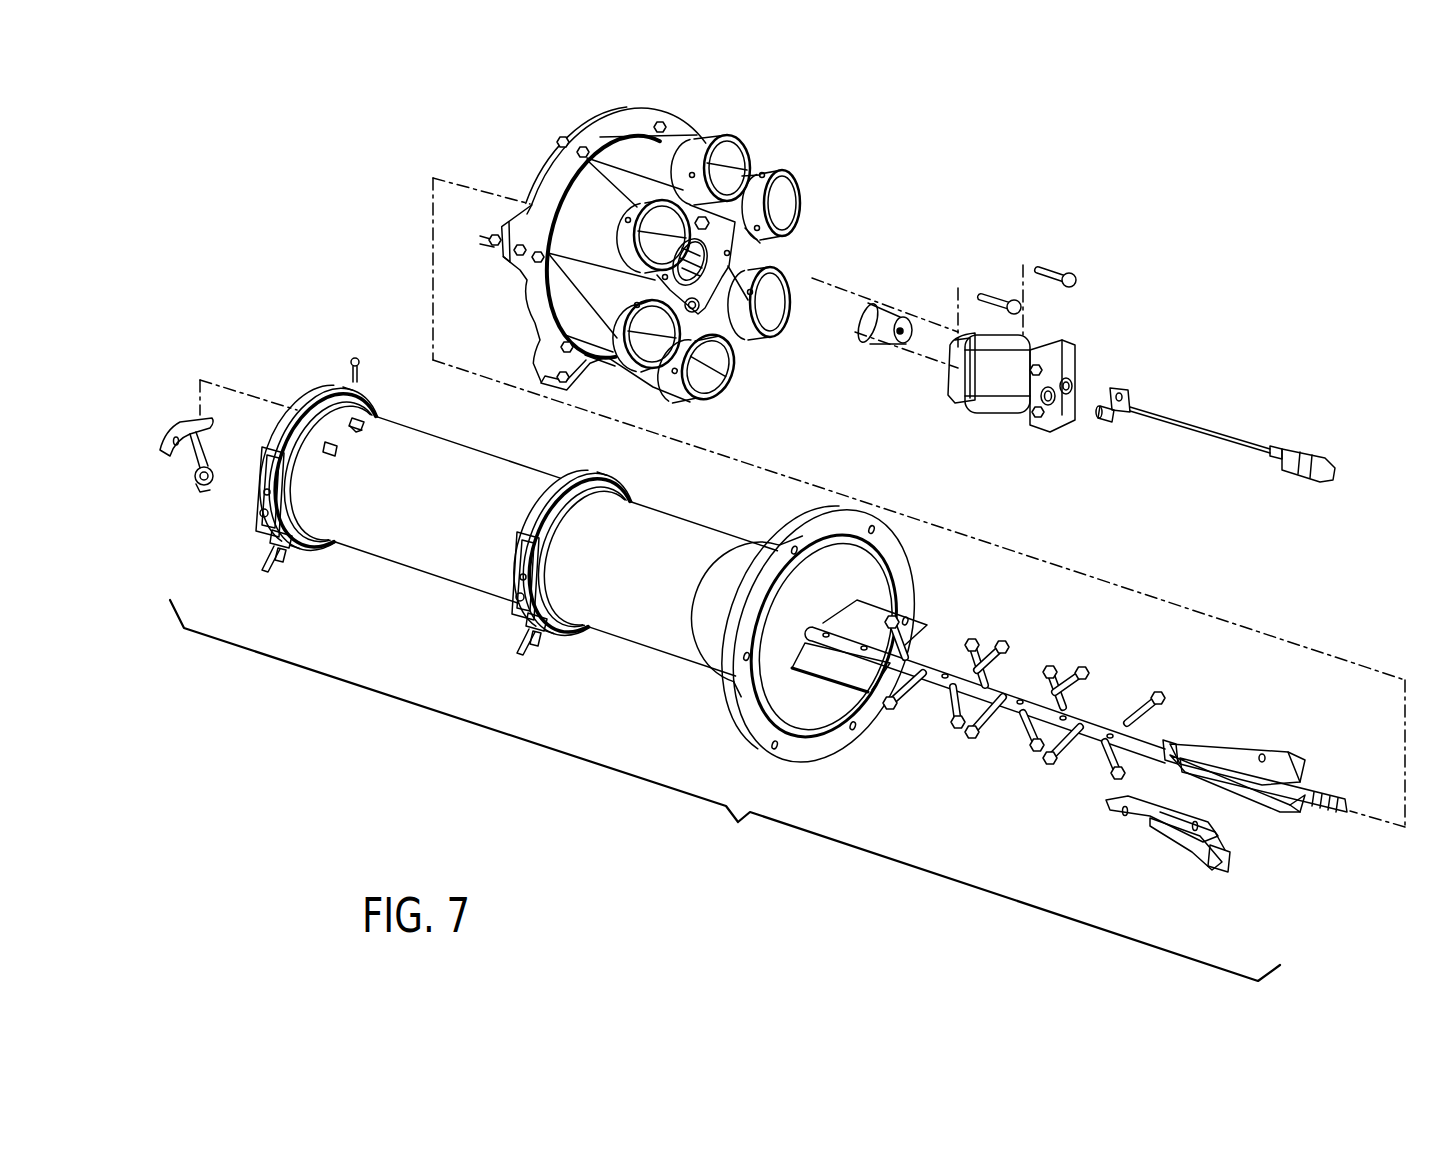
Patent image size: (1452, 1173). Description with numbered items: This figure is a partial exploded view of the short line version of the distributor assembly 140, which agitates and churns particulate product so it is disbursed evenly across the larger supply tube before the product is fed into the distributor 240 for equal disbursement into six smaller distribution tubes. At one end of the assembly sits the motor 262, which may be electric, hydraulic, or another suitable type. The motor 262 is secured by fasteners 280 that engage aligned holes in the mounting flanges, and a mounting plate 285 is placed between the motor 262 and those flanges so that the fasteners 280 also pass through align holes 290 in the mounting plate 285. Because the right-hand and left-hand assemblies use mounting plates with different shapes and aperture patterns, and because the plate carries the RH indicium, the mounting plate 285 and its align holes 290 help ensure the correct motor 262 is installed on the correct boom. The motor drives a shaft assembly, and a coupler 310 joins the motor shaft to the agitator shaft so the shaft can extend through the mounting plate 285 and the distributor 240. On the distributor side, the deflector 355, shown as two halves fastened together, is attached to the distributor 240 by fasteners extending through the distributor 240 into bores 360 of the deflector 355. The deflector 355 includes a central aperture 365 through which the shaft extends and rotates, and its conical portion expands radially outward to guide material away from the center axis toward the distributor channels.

The distributor assembly 140 is at (725, 653).
The distributor 240 is at (632, 125).
The motor 262 is at (1032, 350).
The fasteners 280 is at (1055, 262).
The mounting plate 285 is at (730, 246).
The align holes 290 is at (710, 222).
The coupler 310 is at (884, 327).
The deflector 355 is at (1265, 760).
The bores 360 is at (1298, 767).
The central aperture 365 is at (1236, 840).